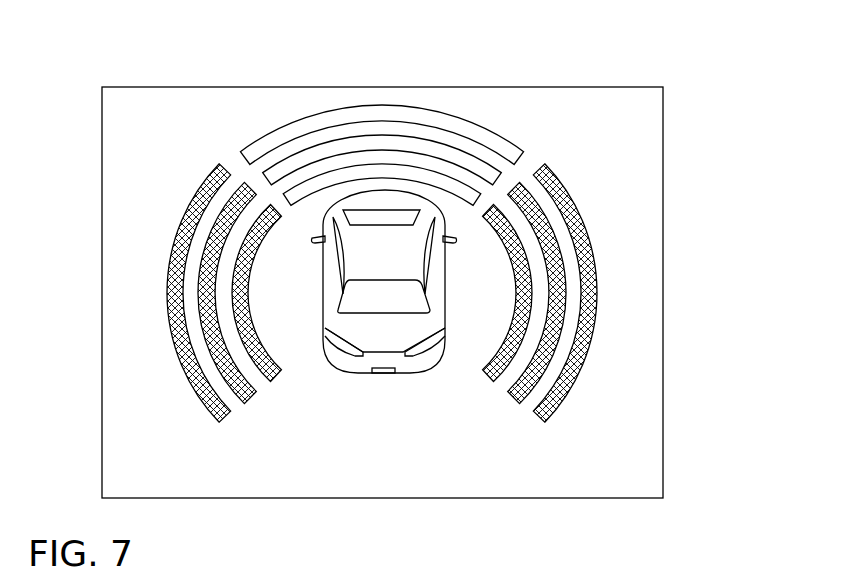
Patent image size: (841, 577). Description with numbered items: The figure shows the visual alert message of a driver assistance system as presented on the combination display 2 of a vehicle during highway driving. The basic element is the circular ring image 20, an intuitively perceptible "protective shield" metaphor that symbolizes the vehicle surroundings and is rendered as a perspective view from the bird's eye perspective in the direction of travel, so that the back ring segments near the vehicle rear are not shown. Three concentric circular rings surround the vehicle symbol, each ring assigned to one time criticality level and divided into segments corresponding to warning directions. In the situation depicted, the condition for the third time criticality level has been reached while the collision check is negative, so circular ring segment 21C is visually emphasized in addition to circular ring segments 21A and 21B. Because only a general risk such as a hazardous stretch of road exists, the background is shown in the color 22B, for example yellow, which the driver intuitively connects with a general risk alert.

The combination display 2 is at (677, 68).
The circular ring image 20 is at (636, 293).
The circular ring segment 21A is at (470, 128).
The circular ring segment 21B is at (407, 143).
The circular ring segment 21C is at (363, 170).
The color 22B is at (277, 467).